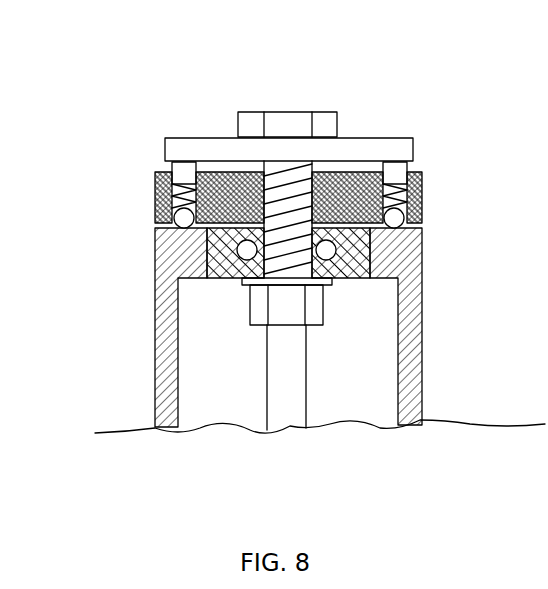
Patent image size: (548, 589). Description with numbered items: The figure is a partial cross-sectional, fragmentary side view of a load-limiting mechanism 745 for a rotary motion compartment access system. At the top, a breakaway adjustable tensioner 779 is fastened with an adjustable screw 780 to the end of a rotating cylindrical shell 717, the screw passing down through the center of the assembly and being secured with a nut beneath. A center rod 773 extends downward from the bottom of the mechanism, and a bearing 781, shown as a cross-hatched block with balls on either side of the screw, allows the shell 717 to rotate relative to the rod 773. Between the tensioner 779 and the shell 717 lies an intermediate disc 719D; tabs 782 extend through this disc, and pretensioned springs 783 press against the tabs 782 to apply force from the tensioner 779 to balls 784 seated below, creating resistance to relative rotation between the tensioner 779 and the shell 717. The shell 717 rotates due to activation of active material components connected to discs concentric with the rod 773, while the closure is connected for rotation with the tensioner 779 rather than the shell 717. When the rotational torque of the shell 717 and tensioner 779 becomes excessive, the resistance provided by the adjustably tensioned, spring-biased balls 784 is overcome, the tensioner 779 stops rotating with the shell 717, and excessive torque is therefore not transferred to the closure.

The load-limiting mechanism 745 is at (114, 88).
The breakaway adjustable tensioner 779 is at (380, 138).
The adjustable screw 780 is at (312, 112).
The intermediate disc 719D is at (220, 175).
The rotating cylindrical shell 717 is at (422, 278).
The bearing 781 is at (360, 280).
The center rod 773 is at (306, 425).
The tabs 782 is at (172, 168).
The pretensioned springs 783 is at (172, 178).
The balls 784 is at (180, 222).